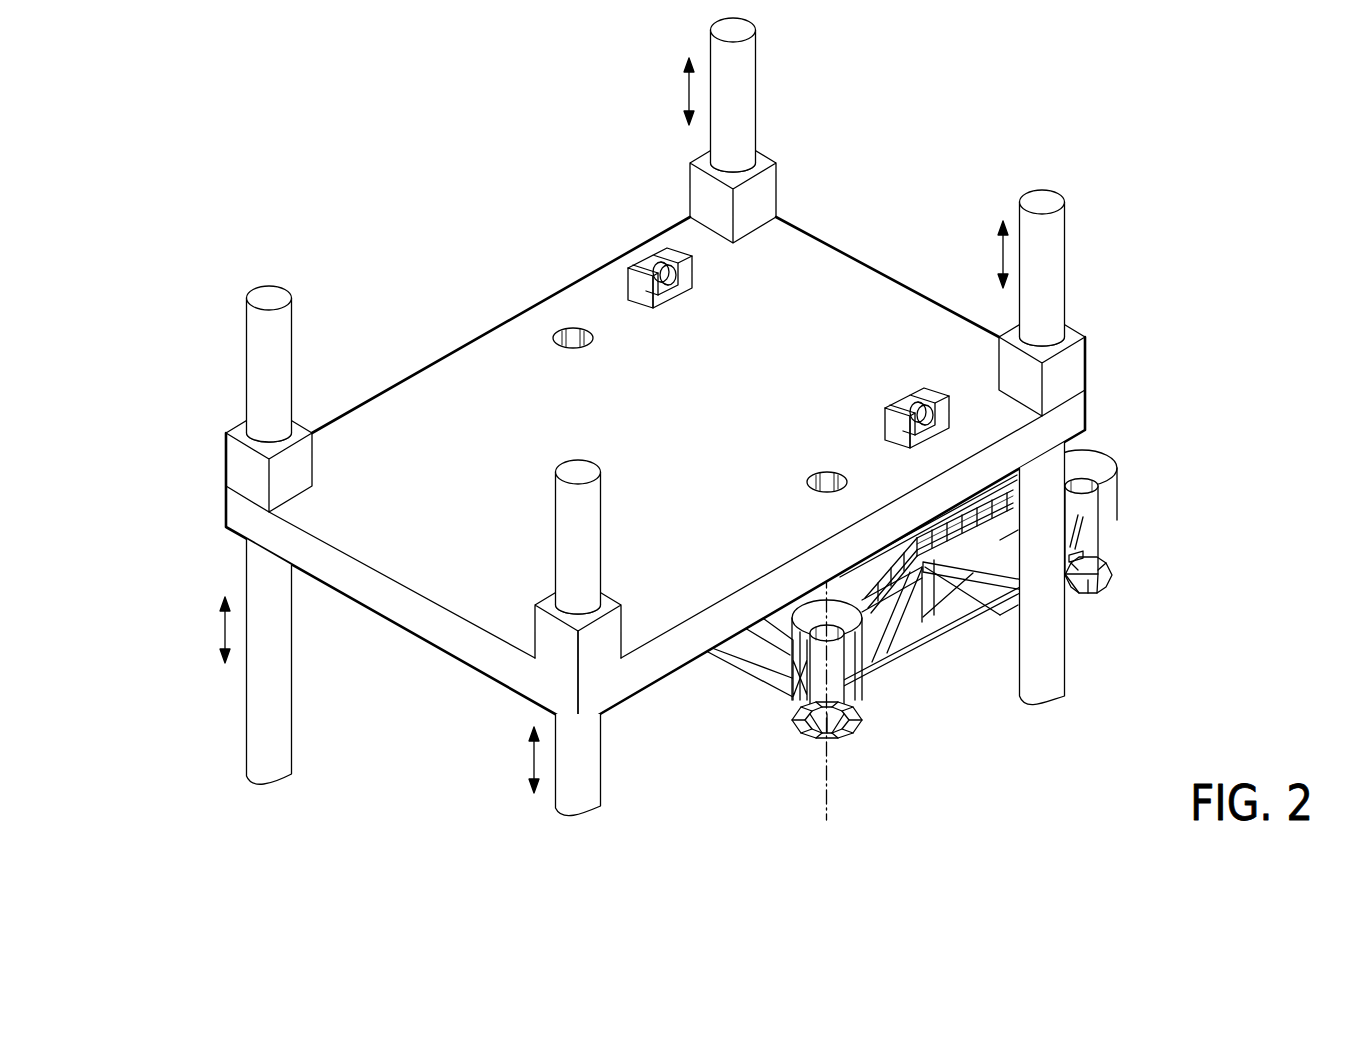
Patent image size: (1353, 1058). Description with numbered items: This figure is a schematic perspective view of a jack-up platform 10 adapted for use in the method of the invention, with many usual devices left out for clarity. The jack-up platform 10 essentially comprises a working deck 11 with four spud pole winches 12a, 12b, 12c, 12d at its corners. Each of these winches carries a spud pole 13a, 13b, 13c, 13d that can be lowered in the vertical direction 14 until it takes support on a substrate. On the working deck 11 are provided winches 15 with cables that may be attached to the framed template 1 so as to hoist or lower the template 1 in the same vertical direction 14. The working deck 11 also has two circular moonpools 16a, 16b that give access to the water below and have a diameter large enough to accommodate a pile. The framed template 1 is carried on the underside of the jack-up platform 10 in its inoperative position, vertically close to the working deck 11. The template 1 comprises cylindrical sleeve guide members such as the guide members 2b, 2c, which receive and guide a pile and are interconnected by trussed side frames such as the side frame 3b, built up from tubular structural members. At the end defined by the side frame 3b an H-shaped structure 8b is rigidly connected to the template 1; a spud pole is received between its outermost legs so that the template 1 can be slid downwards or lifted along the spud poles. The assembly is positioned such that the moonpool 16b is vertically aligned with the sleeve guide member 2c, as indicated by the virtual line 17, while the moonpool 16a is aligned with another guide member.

The framed template 1 is at (902, 729).
The sleeve guide member 2b is at (1093, 533).
The sleeve guide member 2c is at (838, 674).
The side frame 3b is at (907, 642).
The H-shaped structure 8b is at (1042, 590).
The jack-up platform 10 is at (398, 226).
The working deck 11 is at (468, 526).
The spud pole winch 12a is at (768, 190).
The spud pole winch 12b is at (1077, 364).
The spud pole winch 12c is at (612, 630).
The spud pole winch 12d is at (305, 460).
The spud pole 13a is at (747, 83).
The spud pole 13b is at (1055, 255).
The spud pole 13c is at (592, 525).
The spud pole 13d is at (283, 352).
The vertical direction 14 is at (689, 92).
The winch 15 is at (660, 258).
The moonpool 16a is at (567, 333).
The moonpool 16b is at (816, 473).
The virtual line 17 is at (826, 796).